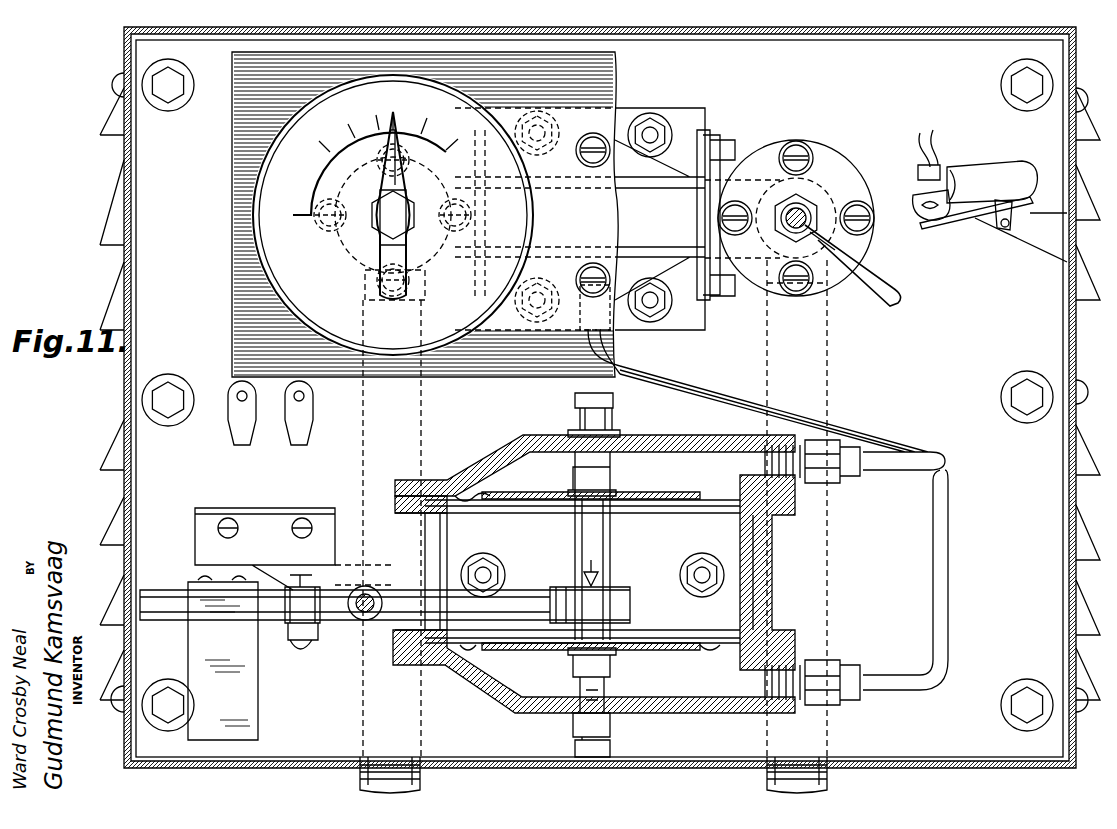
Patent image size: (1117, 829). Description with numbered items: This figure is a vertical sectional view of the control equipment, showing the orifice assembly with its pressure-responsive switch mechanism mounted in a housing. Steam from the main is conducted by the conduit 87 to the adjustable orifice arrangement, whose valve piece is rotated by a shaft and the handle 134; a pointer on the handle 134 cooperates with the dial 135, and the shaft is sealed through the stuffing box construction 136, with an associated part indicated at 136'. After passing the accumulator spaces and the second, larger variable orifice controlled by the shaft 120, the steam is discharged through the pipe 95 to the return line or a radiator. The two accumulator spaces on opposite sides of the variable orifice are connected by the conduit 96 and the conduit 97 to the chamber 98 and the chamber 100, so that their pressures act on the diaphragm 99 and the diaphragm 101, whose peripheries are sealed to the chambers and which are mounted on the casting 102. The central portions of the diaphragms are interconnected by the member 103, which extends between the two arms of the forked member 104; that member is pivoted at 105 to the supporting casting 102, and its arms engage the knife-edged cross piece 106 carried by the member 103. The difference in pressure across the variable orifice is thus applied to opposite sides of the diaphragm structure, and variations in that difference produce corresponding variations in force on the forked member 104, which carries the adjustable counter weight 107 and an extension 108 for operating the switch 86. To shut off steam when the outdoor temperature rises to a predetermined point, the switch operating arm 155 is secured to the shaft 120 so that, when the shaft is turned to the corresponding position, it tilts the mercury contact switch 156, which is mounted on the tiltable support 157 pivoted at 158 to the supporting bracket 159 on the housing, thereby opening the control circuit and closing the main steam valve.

The switch 86 is at (258, 526).
The conduit 87 is at (420, 780).
The pipe 95 is at (827, 780).
The conduit 96 is at (655, 370).
The conduit 97 is at (945, 622).
The chamber 98 is at (513, 468).
The diaphragm 99 is at (478, 503).
The chamber 100 is at (517, 676).
The diaphragm 101 is at (722, 634).
The casting 102 is at (780, 570).
The member 103 is at (604, 538).
The forked member 104 is at (524, 590).
The pivot 105 is at (360, 618).
The knife-edged cross piece 106 is at (599, 580).
The adjustable counter weight 107 is at (258, 703).
The extension 108 is at (305, 586).
The shaft 120 is at (806, 210).
The handle 134 is at (372, 250).
The dial 135 is at (270, 262).
The stuffing box construction 136 is at (373, 156).
The lever arm 136' is at (869, 243).
The switch operating arm 155 is at (882, 296).
The mercury contact switch 156 is at (945, 168).
The tiltable support 157 is at (950, 218).
The pivot 158 is at (1007, 232).
The supporting bracket 159 is at (1050, 252).